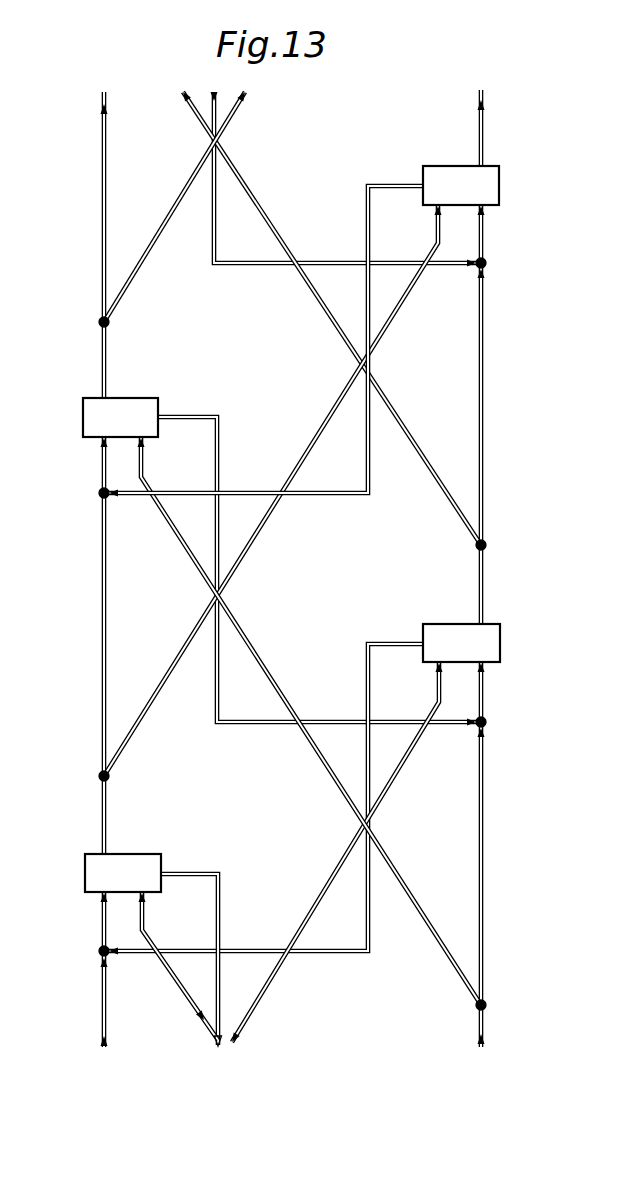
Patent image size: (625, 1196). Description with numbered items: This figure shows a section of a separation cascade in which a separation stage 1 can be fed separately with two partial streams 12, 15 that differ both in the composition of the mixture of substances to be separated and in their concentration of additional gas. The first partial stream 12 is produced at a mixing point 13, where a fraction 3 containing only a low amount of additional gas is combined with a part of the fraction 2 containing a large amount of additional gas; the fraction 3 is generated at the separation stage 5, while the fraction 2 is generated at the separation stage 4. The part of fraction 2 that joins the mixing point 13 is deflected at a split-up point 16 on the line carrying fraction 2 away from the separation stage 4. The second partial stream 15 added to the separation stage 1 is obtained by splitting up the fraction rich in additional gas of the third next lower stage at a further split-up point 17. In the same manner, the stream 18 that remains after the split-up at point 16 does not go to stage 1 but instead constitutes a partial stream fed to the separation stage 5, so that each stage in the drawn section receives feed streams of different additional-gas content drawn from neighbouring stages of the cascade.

The separation stage 1 is at (83, 416).
The fraction containing a large amount of additional gas 2 is at (102, 815).
The fraction containing a low amount of additional gas 3 is at (333, 494).
The separation stage 4 is at (85, 863).
The separation stage 5 is at (497, 184).
The partial stream 12 is at (102, 459).
The mixing point 13 is at (98, 495).
The partial stream 15 is at (143, 467).
The split-up point 16 is at (100, 775).
The split-up point 17 is at (490, 1003).
The stream 18 is at (400, 307).